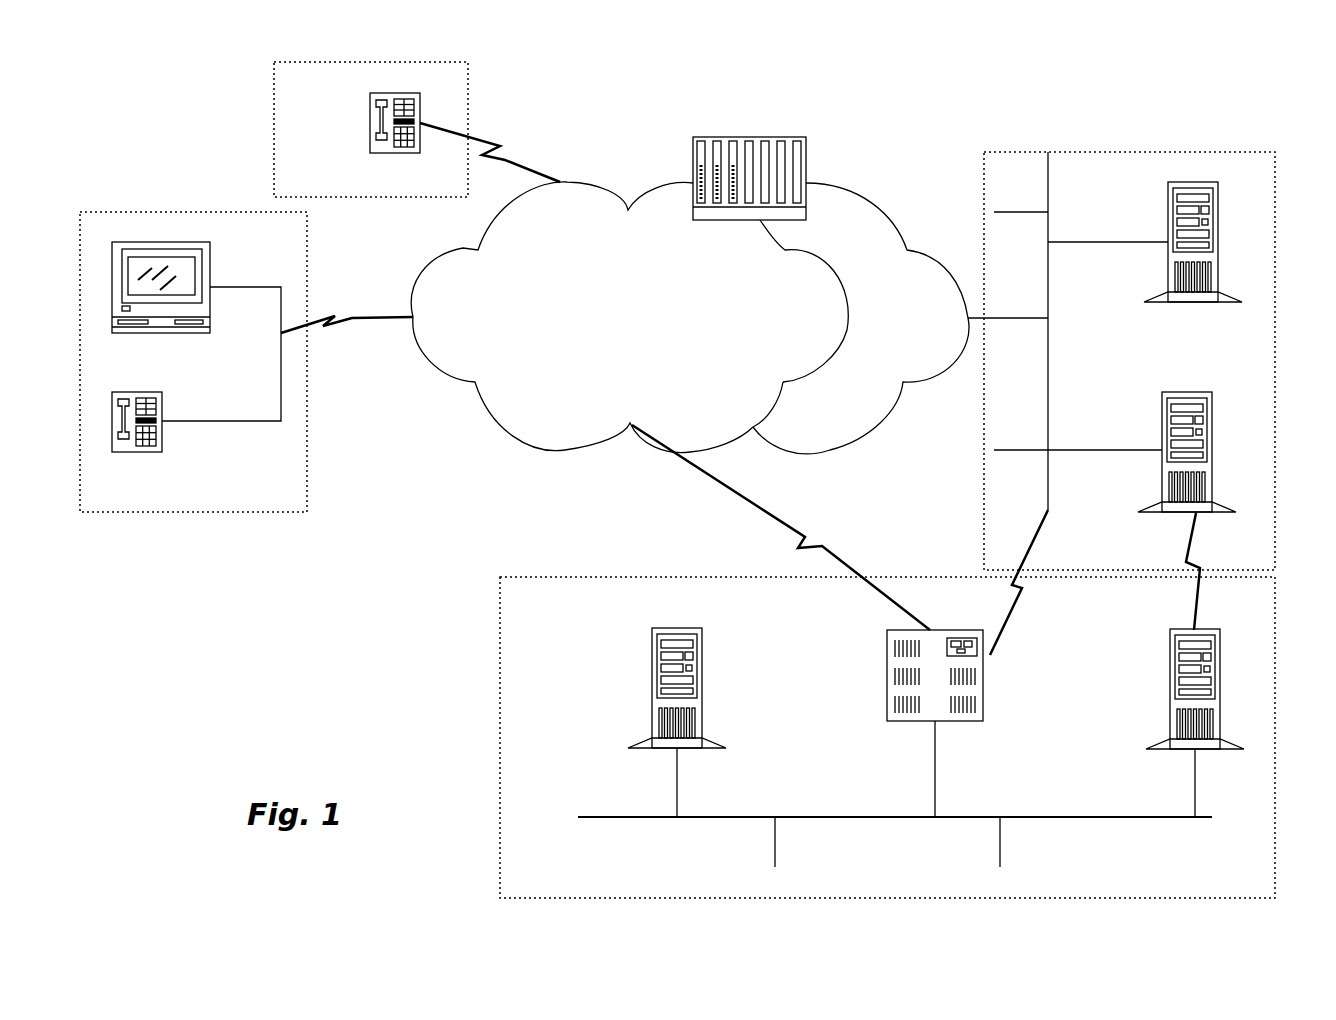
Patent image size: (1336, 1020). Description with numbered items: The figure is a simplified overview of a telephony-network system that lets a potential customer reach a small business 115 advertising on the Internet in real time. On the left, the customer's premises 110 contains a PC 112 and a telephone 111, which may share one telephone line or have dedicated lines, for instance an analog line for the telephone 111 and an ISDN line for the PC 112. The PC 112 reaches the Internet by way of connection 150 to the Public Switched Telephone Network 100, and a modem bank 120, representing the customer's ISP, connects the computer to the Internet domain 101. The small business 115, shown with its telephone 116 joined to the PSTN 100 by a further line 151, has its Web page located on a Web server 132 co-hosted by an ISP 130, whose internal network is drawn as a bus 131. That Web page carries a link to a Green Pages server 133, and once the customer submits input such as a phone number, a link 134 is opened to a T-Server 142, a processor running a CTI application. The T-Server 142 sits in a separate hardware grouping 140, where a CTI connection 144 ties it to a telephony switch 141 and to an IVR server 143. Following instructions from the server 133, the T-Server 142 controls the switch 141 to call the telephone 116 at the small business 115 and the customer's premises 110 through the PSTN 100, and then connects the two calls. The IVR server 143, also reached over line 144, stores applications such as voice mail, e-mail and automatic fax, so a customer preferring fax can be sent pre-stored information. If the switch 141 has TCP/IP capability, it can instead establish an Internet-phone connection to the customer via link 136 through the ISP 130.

The Public Switched Telephone Network 100 is at (563, 450).
The Internet domain 101 is at (812, 450).
The premises 110 is at (211, 530).
The telephone 111 is at (135, 452).
The PC 112 is at (165, 336).
The small business 115 is at (494, 107).
The telephone 116 is at (368, 132).
The modem bank 120 is at (750, 137).
The ISP 130 is at (1232, 140).
The network bus 131 is at (1048, 226).
The Web server 132 is at (1195, 303).
The Green Pages server 133 is at (1178, 515).
The link 134 is at (1205, 570).
The link 136 is at (1020, 605).
The hardware grouping 140 is at (514, 568).
The telephony switch 141 is at (885, 660).
The T-Server 142 is at (1170, 690).
The IVR server 143 is at (646, 690).
The CTI connection 144 is at (725, 818).
The connection 150 is at (337, 330).
The telephone line link 151 is at (497, 142).